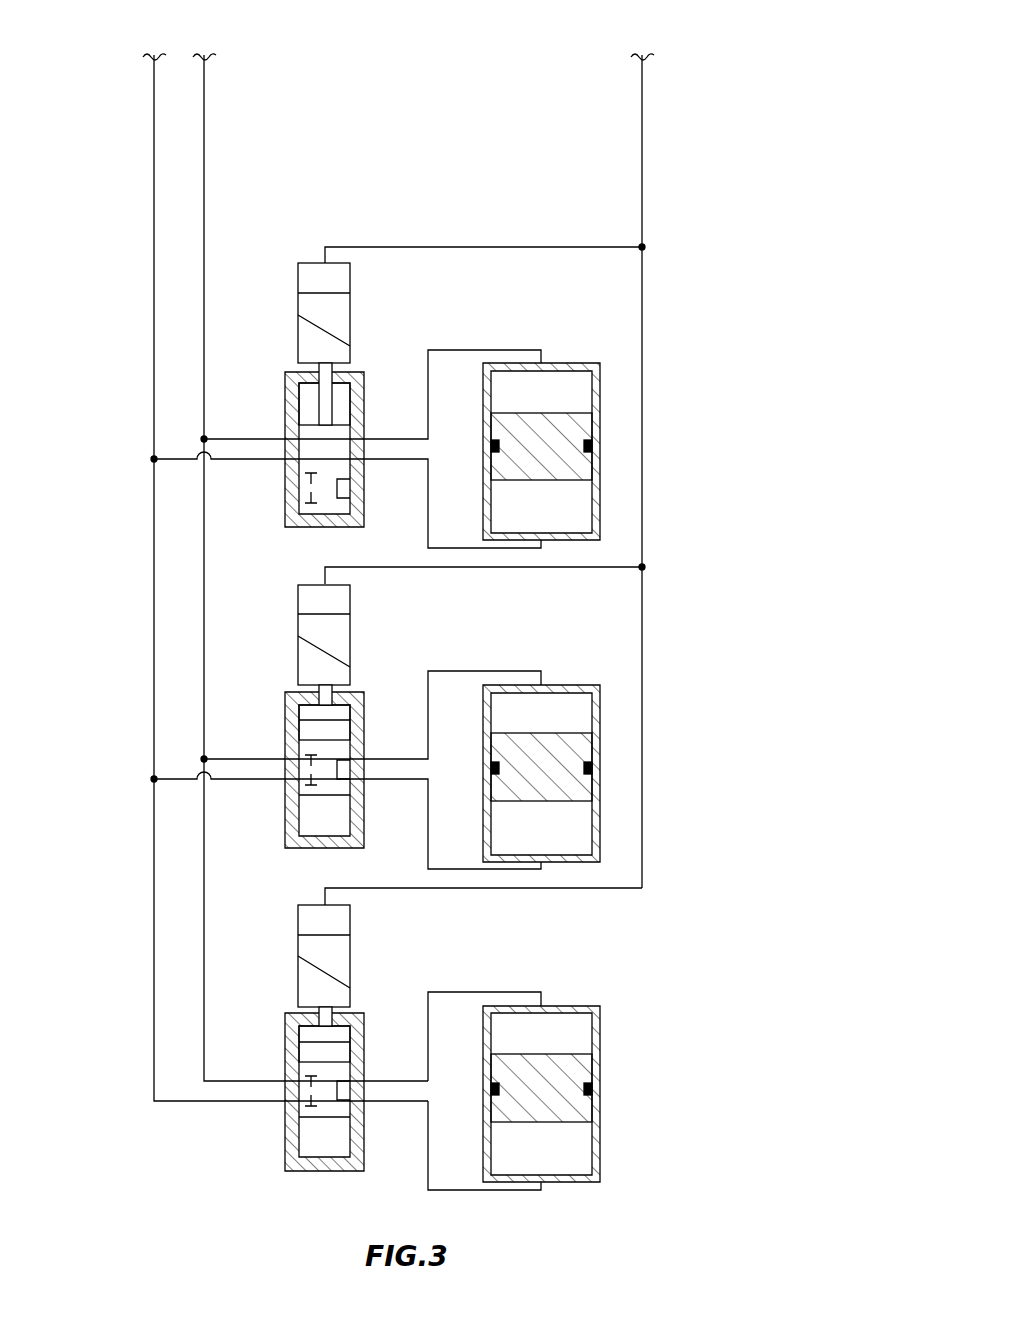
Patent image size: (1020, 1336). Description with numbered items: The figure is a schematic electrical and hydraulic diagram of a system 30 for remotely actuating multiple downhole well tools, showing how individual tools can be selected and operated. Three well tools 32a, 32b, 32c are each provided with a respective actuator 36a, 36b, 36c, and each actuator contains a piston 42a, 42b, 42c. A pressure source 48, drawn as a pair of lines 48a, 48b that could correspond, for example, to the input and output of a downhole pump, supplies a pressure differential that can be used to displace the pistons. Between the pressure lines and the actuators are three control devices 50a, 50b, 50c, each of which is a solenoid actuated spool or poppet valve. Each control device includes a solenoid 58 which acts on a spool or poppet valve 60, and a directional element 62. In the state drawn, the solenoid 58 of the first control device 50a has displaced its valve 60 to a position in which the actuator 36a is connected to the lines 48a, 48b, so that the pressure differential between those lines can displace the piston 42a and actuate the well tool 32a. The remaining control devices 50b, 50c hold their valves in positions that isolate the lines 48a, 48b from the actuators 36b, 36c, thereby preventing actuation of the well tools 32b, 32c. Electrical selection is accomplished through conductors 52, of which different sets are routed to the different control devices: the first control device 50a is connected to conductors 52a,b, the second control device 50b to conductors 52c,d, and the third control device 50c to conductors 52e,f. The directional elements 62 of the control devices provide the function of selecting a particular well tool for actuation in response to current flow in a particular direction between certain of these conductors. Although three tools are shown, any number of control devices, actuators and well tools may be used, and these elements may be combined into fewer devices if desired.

The system 30 is at (746, 60).
The well tool 32a is at (657, 410).
The well tool 32b is at (657, 727).
The well tool 32c is at (655, 1100).
The actuator 36a is at (555, 363).
The actuator 36b is at (553, 685).
The actuator 36c is at (573, 1006).
The piston 42a is at (592, 437).
The piston 42b is at (592, 788).
The piston 42c is at (594, 1071).
The pressure source 48 is at (153, 207).
The line 48a is at (154, 137).
The line 48b is at (205, 137).
The control device 50a is at (380, 321).
The control device 50b is at (380, 634).
The control device 50c is at (380, 972).
The conductors 52 is at (646, 146).
The conductors 52a,b is at (579, 247).
The conductors 52c,d is at (517, 568).
The conductors 52e,f is at (582, 888).
The solenoid 58 is at (298, 328).
The spool or poppet valve 60 is at (341, 414).
The directional element 62 is at (352, 282).